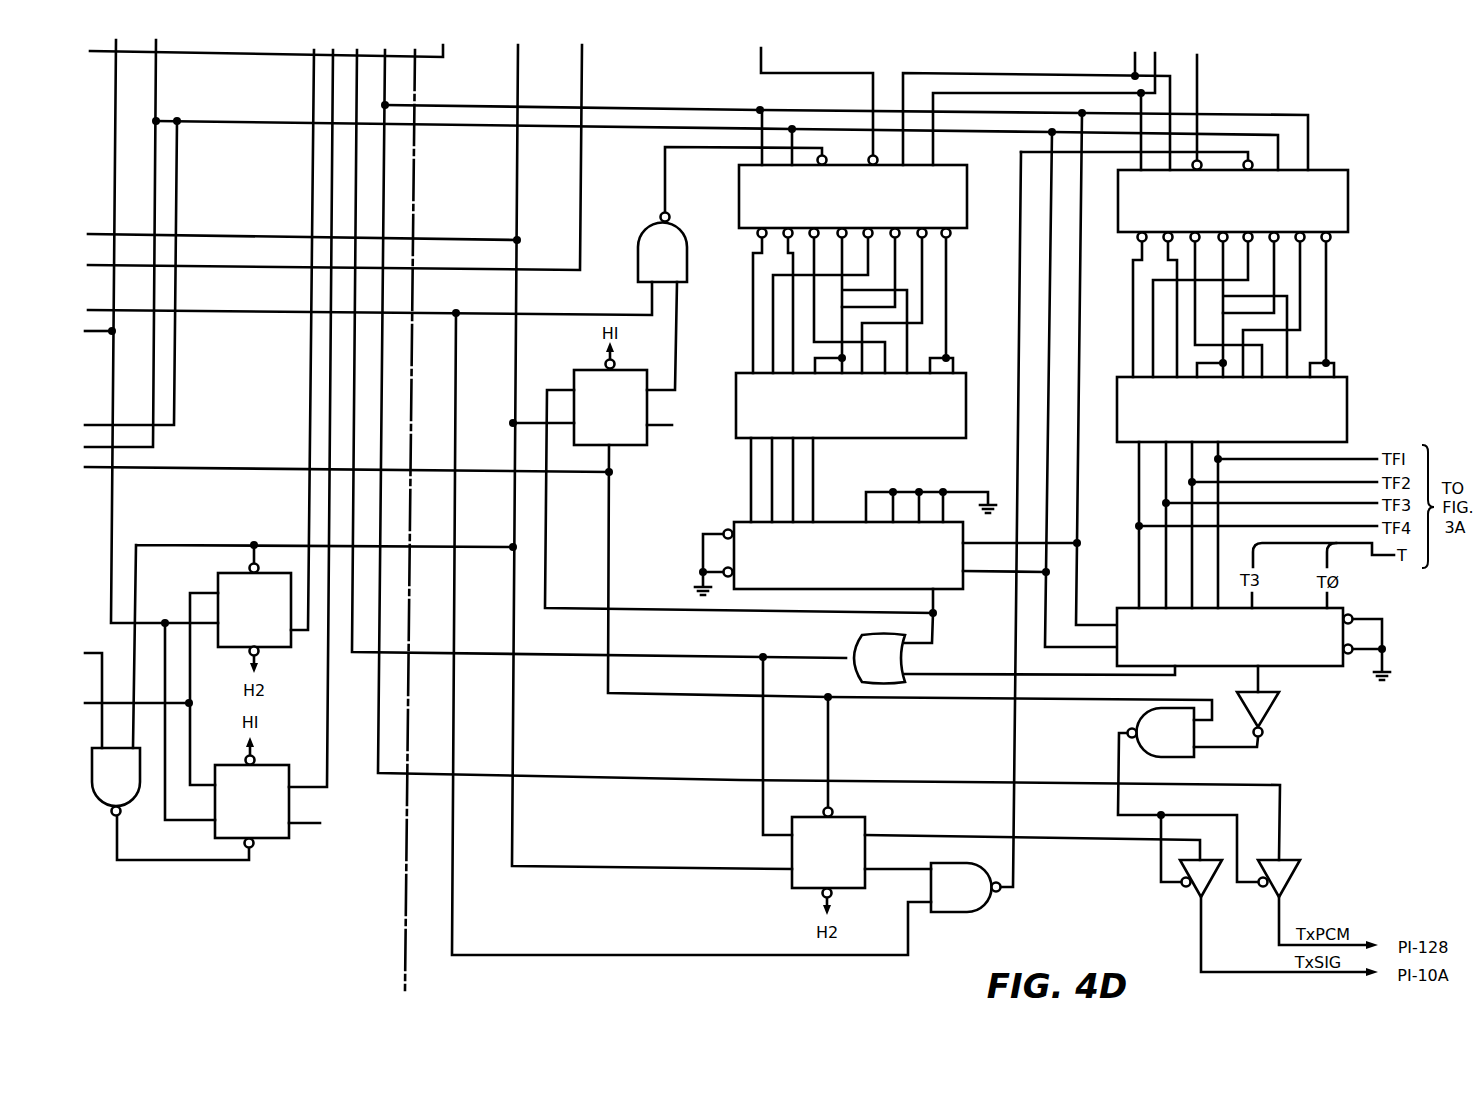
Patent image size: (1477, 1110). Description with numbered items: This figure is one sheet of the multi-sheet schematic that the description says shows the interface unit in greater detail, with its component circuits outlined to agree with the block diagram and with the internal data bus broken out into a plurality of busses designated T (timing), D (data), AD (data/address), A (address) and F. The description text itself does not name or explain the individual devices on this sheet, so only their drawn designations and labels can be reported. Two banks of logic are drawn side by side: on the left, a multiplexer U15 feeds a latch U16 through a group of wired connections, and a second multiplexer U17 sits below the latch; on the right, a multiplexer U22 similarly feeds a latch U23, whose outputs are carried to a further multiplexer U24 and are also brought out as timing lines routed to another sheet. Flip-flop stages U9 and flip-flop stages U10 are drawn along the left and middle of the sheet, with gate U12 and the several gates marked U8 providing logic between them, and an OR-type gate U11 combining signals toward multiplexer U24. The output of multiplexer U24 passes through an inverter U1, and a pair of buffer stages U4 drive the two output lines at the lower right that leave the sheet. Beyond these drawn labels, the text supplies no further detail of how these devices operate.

The multiplexer U15 is at (853, 197).
The latch U16 is at (851, 405).
The multiplexer U17 is at (844, 555).
The multiplexer U22 is at (1233, 201).
The latch U23 is at (1232, 409).
The multiplexer U24 is at (1235, 637).
The flip-flop U9 is at (719, 629).
The flip-flop U10 is at (253, 706).
The NAND gate U12 is at (116, 782).
The NAND gate U8 is at (916, 563).
The OR gate U11 is at (879, 659).
The inverter U1 is at (1269, 714).
The tri-state buffer U4 is at (1250, 884).